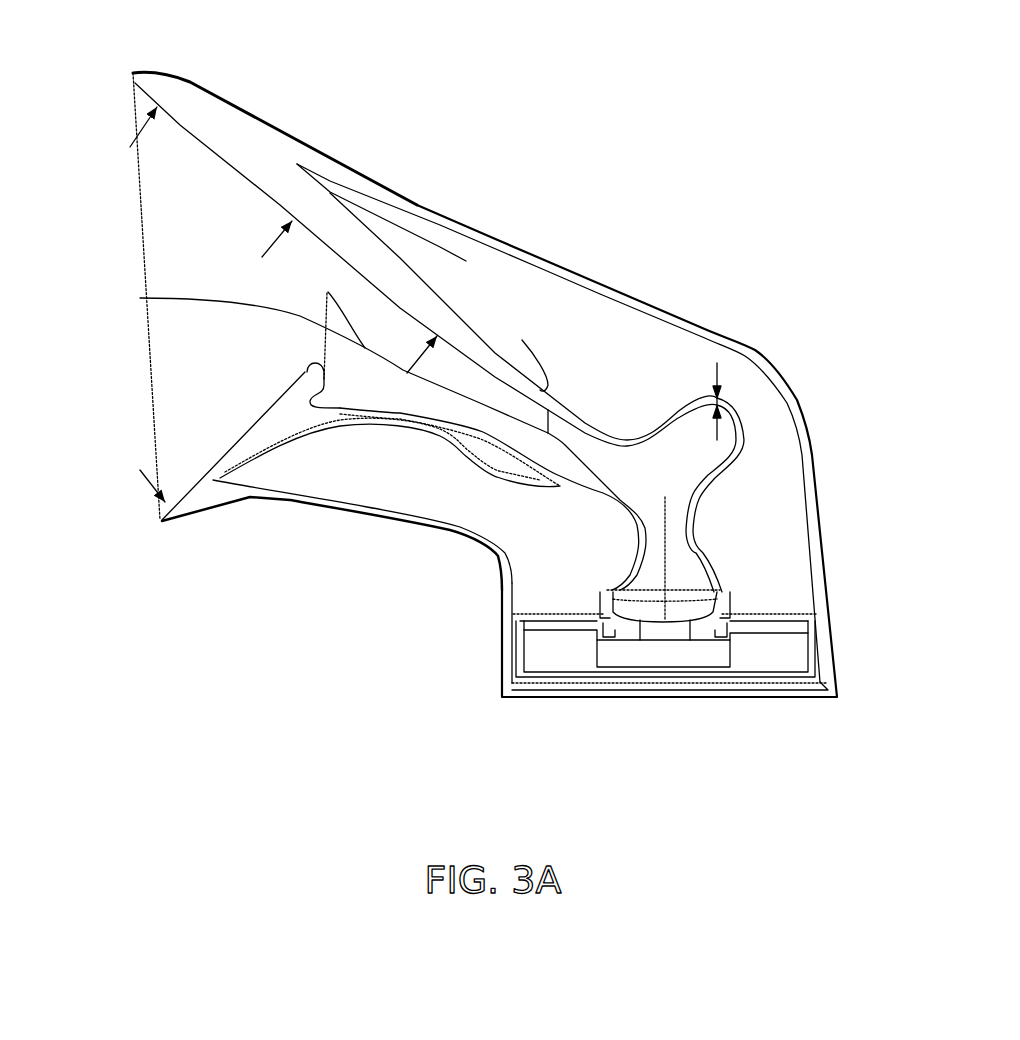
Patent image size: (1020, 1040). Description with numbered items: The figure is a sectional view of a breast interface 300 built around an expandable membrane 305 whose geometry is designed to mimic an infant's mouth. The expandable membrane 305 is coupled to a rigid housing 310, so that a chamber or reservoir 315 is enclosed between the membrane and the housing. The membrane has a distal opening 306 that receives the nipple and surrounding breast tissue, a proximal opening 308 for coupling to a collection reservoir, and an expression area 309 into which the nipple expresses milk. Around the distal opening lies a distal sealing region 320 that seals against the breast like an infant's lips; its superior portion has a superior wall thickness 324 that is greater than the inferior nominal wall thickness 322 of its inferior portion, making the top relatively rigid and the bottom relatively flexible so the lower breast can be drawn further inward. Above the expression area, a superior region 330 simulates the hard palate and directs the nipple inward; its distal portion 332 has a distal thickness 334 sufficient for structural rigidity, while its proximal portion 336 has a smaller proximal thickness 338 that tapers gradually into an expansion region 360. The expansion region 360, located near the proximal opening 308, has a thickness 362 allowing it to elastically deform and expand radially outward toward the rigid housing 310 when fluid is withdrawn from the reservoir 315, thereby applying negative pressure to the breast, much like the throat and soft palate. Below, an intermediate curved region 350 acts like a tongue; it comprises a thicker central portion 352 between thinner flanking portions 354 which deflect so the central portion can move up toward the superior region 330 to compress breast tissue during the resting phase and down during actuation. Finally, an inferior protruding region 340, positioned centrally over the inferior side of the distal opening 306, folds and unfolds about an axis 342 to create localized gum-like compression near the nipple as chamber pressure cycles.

The breast interface 300 is at (625, 82).
The expandable membrane 305 is at (614, 433).
The distal opening 306 is at (166, 292).
The proximal opening 308 is at (668, 632).
The expression area 309 is at (662, 475).
The rigid housing 310 is at (582, 346).
The chamber or reservoir 315 is at (603, 287).
The distal sealing region 320 is at (180, 503).
The inferior nominal wall thickness 322 is at (200, 557).
The superior wall thickness 324 is at (216, 45).
The superior region 330 is at (363, 244).
The distal portion 332 is at (247, 110).
The distal thickness 334 is at (325, 182).
The proximal portion 336 is at (458, 313).
The proximal thickness 338 is at (574, 282).
The inferior protruding region 340 is at (317, 370).
The axis 342 is at (303, 390).
The intermediate curved region 350 is at (457, 433).
The thicker central portion 352 is at (502, 462).
The thinner flanking portions 354 is at (412, 430).
The expansion region 360 is at (745, 414).
The thickness 362 is at (721, 373).